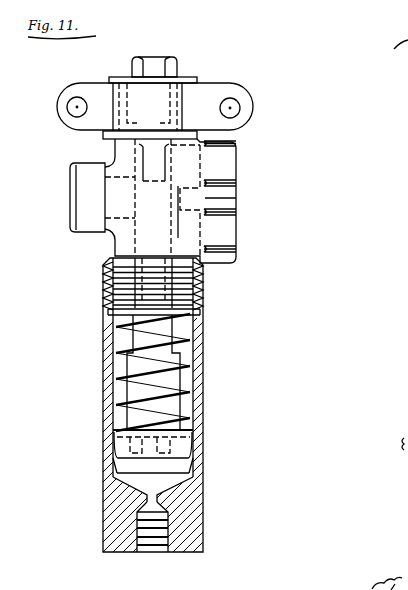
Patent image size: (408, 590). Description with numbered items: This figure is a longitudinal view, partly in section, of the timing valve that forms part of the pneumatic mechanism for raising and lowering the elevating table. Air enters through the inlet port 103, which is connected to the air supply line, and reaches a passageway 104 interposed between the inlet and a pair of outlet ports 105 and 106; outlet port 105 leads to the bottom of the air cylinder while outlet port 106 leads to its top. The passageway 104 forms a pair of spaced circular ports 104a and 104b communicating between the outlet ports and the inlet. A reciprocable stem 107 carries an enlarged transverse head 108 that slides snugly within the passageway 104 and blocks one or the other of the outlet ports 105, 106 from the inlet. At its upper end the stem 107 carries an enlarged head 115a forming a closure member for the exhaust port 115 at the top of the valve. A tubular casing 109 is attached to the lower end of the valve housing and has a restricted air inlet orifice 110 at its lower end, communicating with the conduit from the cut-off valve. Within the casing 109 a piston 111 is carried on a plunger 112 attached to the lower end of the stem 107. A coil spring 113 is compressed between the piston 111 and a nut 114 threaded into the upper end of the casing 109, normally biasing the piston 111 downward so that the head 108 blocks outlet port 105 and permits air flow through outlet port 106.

The inlet port 103 is at (80, 207).
The passageway 104 is at (167, 162).
The circular port 104a is at (137, 163).
The circular port 104b is at (133, 226).
The outlet port 105 is at (227, 233).
The outlet port 106 is at (228, 162).
The reciprocable stem 107 is at (153, 157).
The enlarged transverse head 108 is at (158, 210).
The tubular casing 109 is at (202, 375).
The restricted air inlet orifice 110 is at (150, 503).
The piston 111 is at (187, 432).
The plunger 112 is at (170, 405).
The coil spring 113 is at (180, 360).
The nut 114 is at (197, 312).
The exhaust port 115 is at (173, 98).
The enlarged head 115a is at (145, 97).